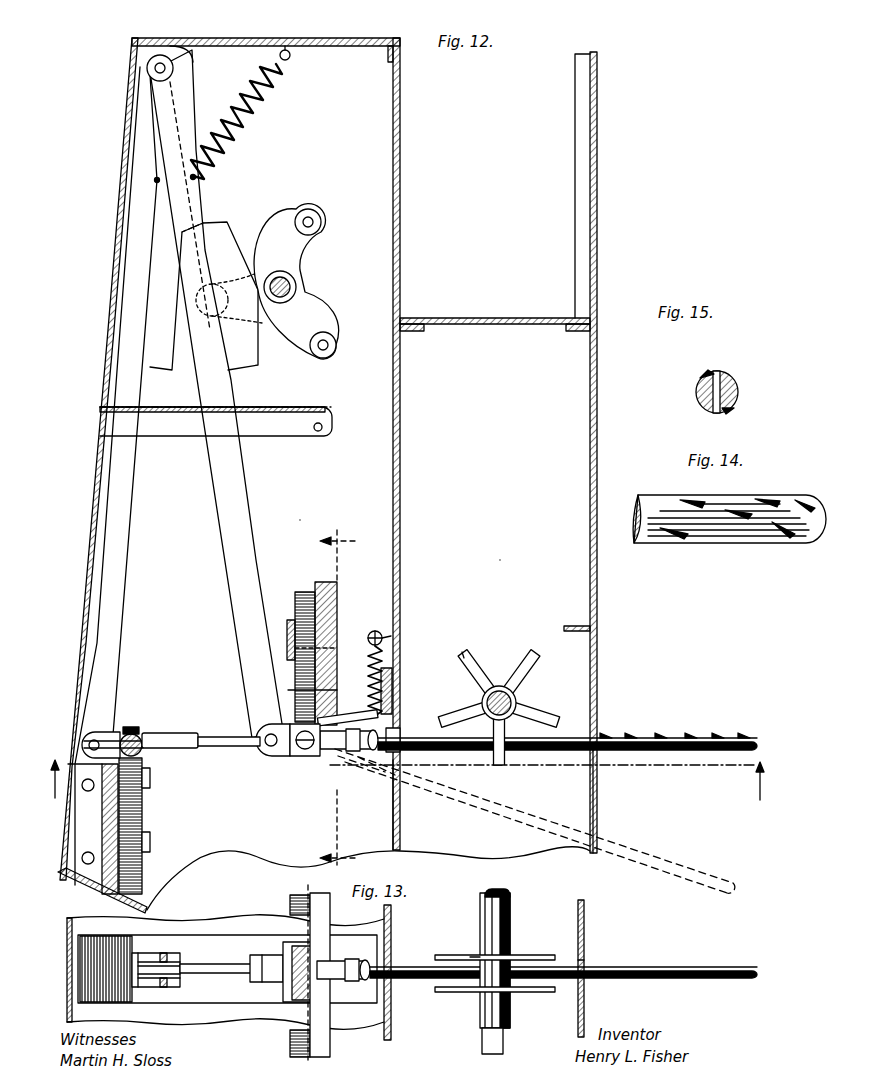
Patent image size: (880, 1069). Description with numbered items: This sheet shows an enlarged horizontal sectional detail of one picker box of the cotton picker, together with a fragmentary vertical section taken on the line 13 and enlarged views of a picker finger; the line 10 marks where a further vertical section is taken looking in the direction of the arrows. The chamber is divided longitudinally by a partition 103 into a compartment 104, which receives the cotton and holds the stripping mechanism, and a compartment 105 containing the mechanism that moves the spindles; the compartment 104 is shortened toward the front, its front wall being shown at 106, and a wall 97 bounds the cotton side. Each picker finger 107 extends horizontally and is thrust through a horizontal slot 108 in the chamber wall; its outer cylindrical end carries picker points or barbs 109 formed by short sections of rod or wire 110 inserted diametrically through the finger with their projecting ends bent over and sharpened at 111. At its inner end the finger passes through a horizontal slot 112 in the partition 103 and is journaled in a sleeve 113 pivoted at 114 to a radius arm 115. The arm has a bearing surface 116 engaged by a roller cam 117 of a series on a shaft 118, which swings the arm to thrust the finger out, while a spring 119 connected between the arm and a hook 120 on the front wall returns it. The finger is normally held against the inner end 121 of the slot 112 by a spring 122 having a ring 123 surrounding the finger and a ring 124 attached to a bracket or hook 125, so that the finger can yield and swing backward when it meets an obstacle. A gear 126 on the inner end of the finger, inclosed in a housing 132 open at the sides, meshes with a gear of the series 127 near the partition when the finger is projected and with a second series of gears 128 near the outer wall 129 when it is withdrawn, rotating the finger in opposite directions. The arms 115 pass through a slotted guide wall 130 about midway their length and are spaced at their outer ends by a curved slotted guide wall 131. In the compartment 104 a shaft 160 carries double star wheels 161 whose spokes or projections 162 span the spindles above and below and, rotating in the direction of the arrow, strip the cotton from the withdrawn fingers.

In FIG. 12, the section line 10— 10 is at (337, 699).
In FIG. 12, the section line 13— 13 is at (417, 779).
In FIG. 12, the partition plate 97 is at (598, 460).
In FIG. 13, the partition plate 97 is at (586, 920).
In FIG. 12, the partition 103 is at (400, 485).
In FIG. 13, the partition 103 is at (388, 1013).
In FIG. 12, the compartment 104 is at (484, 546).
In FIG. 12, the compartment 105 is at (302, 509).
In FIG. 12, the front wall 106 is at (486, 318).
In FIG. 12, the picker finger 107 is at (628, 737).
In FIG. 13, the picker finger 107 is at (676, 966).
In FIG. 12, the horizontal slot 108 is at (598, 793).
In FIG. 13, the horizontal slot 108 is at (586, 958).
In FIG. 12, the picker points or barbs 109 is at (700, 737).
In FIG. 15, the short section of rod or wire 110 is at (735, 381).
In FIG. 15, the bent-over sharpened ends 111 is at (705, 375).
In FIG. 14, the bent-over sharpened ends 111 is at (770, 548).
In FIG. 12, the horizontal slot 112 is at (400, 815).
In FIG. 13, the horizontal slot 112 is at (393, 980).
In FIG. 12, the sleeve 113 is at (172, 734).
In FIG. 13, the sleeve 113 is at (340, 960).
In FIG. 12, the pivot 114 is at (103, 736).
In FIG. 13, the pivot 114 is at (270, 983).
In FIG. 12, the radius arm 115 is at (225, 507).
In FIG. 13, the radius arm 115 is at (200, 968).
In FIG. 12, the bearing surface 116 is at (232, 222).
In FIG. 12, the roller cam 117 is at (322, 245).
In FIG. 12, the shaft 118 is at (298, 285).
In FIG. 12, the spring 119 is at (250, 120).
In FIG. 12, the hook 120 is at (291, 57).
In FIG. 12, the inner end of the groove 121 is at (398, 733).
In FIG. 12, the spring 122 is at (390, 663).
In FIG. 12, the ring 123 is at (372, 752).
In FIG. 13, the ring 123 is at (380, 940).
In FIG. 12, the ring 124 is at (375, 630).
In FIG. 12, the bracket or hook 125 is at (386, 638).
In FIG. 12, the gear 126 is at (134, 727).
In FIG. 13, the gear 126 is at (292, 1002).
In FIG. 12, the gear of the series 127 is at (293, 690).
In FIG. 13, the gear of the series 127 is at (320, 975).
In FIG. 12, the second series of gears 128 is at (134, 820).
In FIG. 13, the second series of gears 128 is at (106, 969).
In FIG. 12, the outer wall 129 is at (82, 645).
In FIG. 12, the slotted guide wall 130 is at (298, 407).
In FIG. 12, the curved slotted guide wall 131 is at (226, 737).
In FIG. 13, the curved slotted guide wall 131 is at (230, 938).
In FIG. 12, the housing 132 is at (142, 757).
In FIG. 13, the housing 132 is at (318, 1003).
In FIG. 12, the shaft 160 is at (502, 690).
In FIG. 13, the shaft 160 is at (508, 893).
In FIG. 12, the double star wheel 161 is at (517, 695).
In FIG. 13, the double star wheel 161 is at (476, 955).
In FIG. 12, the spokes or projections 162 is at (466, 648).
In FIG. 13, the spokes or projections 162 is at (437, 955).